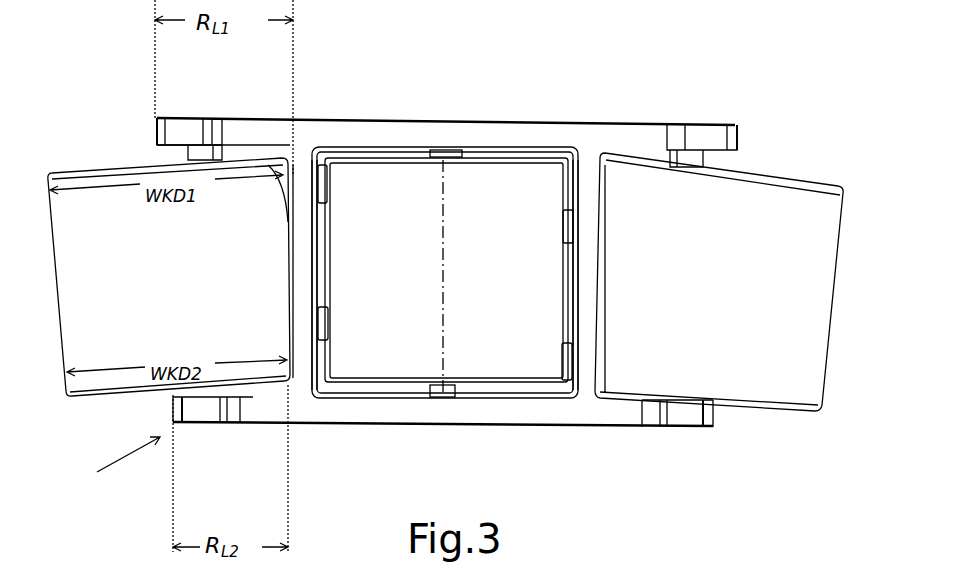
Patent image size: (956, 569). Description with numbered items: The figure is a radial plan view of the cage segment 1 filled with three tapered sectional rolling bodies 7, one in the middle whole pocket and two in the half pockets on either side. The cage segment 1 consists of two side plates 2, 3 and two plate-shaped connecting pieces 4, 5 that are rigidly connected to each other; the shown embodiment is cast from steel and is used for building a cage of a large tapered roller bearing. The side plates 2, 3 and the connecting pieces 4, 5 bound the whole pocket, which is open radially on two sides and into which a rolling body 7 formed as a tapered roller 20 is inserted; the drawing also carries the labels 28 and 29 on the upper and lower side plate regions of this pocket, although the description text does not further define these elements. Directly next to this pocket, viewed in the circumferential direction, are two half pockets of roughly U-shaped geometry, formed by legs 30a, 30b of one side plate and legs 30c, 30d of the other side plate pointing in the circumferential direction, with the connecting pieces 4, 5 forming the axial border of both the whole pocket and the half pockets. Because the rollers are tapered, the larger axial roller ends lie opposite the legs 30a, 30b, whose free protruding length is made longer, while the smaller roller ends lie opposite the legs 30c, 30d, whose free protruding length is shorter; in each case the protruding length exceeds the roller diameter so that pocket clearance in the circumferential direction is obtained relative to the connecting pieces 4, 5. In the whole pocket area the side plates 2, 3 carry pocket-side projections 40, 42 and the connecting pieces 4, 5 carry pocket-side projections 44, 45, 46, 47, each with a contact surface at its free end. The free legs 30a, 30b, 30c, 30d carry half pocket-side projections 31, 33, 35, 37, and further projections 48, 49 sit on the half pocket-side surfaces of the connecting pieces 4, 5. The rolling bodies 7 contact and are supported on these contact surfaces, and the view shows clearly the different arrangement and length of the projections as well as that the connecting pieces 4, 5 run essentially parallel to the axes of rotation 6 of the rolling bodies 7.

The cage segment 1 is at (119, 461).
The side plate 2 is at (477, 120).
The side plate 3 is at (450, 427).
The connecting piece 4 is at (304, 167).
The connecting piece 5 is at (590, 173).
The axis of rotation 6 is at (447, 312).
The rolling body 7 is at (258, 283).
The tapered roller 20 is at (413, 276).
The upper frame profile 28 is at (391, 143).
The lower frame profile 29 is at (411, 418).
The leg 30a is at (195, 118).
The leg 30b is at (652, 122).
The leg 30c is at (273, 420).
The leg 30d is at (627, 428).
The half pocket-side projection 31 is at (185, 150).
The half pocket-side projection 33 is at (730, 157).
The half pocket-side projection 35 is at (197, 400).
The half pocket-side projection 37 is at (687, 402).
The pocket-side projection 40 is at (430, 152).
The pocket-side projection 42 is at (453, 393).
The pocket-side projection 44 is at (327, 183).
The pocket-side projection 45 is at (333, 327).
The pocket-side projection 46 is at (557, 222).
The pocket-side projection 47 is at (557, 363).
The projection 48 is at (268, 165).
The projection 49 is at (618, 172).